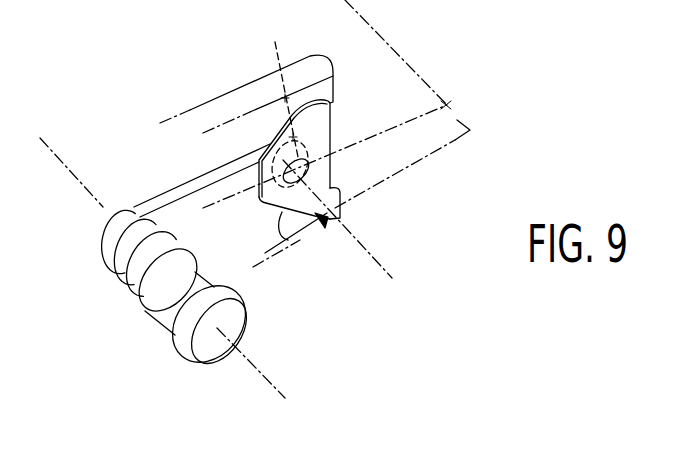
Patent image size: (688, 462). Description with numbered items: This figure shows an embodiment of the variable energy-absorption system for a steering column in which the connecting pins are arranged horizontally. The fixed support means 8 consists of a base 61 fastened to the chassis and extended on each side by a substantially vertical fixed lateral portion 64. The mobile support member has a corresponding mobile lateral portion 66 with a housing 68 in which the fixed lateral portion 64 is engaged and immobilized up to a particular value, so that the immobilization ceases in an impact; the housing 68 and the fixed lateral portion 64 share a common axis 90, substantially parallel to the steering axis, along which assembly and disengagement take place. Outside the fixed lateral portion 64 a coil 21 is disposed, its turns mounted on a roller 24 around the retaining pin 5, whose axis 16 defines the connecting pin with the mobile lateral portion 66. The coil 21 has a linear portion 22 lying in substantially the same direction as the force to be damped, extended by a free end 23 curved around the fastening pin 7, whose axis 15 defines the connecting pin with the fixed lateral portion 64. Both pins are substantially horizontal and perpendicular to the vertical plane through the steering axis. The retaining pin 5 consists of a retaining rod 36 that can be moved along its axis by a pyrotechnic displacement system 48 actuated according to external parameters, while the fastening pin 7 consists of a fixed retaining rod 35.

The mobile lateral portion 66 is at (257, 90).
The free end 23 is at (282, 83).
The base 61 is at (393, 43).
The fixed lateral portion 64 is at (325, 122).
The common axis 90 is at (445, 105).
The fixed retaining rod 35 is at (325, 157).
The fixed support means 8 is at (330, 184).
The axis of the fastening pin 15 is at (368, 250).
The housing 68 is at (288, 240).
The retaining pin 5 is at (327, 226).
The linear portion 22 is at (188, 188).
The retaining rod 36 is at (100, 227).
The coil 21 is at (105, 262).
The roller 24 is at (137, 274).
The pyrotechnic displacement system 48 is at (165, 312).
The axis of the retaining pin 16 is at (268, 376).
The fastening pin 7 is at (204, 366).